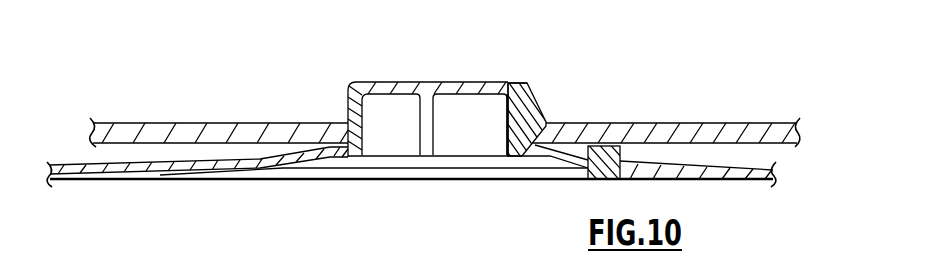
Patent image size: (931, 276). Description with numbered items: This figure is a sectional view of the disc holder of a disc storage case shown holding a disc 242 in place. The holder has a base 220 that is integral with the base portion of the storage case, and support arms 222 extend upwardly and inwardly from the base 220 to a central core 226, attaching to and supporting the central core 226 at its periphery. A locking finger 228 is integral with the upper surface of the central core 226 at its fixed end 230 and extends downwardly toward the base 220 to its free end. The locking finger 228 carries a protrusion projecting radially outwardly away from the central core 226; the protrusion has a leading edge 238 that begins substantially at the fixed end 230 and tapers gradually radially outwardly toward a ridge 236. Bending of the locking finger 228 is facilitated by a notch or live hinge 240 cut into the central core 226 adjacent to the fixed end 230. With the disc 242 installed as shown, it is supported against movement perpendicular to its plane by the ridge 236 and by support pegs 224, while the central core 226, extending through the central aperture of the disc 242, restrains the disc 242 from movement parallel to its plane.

The base 220 is at (312, 181).
The support arms 222 is at (372, 167).
The support pegs 224 is at (585, 166).
The central core 226 is at (400, 81).
The locking finger 228 is at (507, 92).
The fixed end 230 is at (528, 83).
The ridge 236 is at (550, 120).
The leading edge 238 is at (545, 113).
The live hinge 240 is at (508, 83).
The disc 242 is at (797, 126).